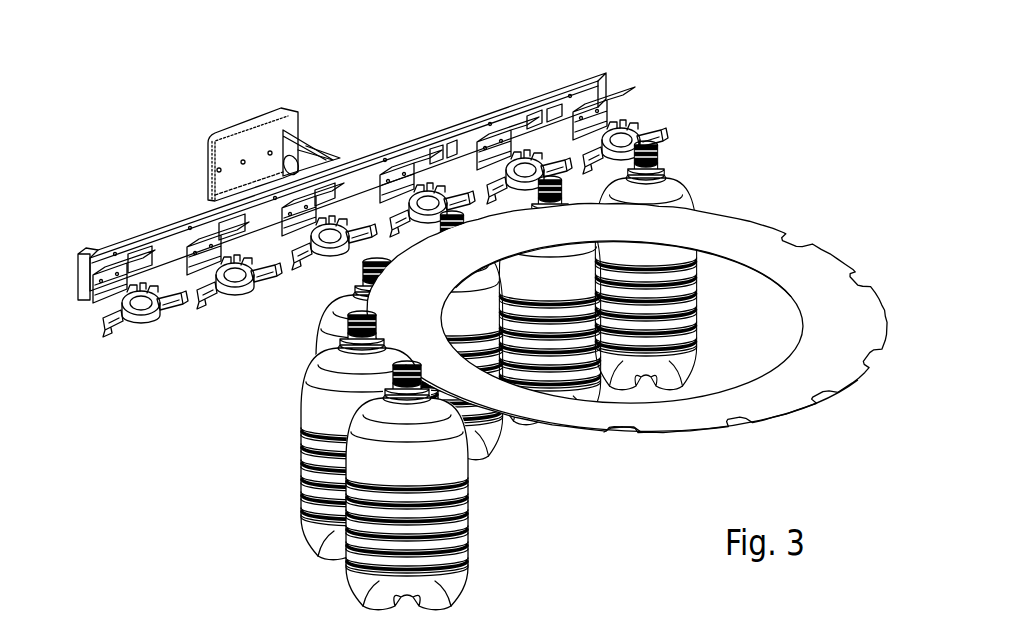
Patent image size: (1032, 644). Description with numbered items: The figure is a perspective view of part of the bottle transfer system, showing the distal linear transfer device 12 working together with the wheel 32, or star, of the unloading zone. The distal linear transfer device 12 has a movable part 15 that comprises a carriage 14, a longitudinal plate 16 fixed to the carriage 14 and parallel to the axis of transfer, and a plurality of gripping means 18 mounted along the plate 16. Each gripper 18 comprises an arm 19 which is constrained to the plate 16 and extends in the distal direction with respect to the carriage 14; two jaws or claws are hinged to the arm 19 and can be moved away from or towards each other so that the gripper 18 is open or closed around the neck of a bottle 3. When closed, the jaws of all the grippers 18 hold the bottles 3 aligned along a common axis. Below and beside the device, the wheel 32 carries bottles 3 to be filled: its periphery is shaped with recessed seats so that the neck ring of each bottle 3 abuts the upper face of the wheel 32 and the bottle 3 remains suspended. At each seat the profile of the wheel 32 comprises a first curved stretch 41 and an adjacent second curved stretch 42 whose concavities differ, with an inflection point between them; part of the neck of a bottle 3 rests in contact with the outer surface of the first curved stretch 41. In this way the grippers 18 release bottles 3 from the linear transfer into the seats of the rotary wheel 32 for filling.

The bottle 3 is at (667, 193).
The distal linear transfer device 12 is at (130, 104).
The carriage 14 is at (233, 147).
The movable part 15 is at (293, 99).
The longitudinal plate 16 is at (435, 147).
The gripping means 18 is at (641, 102).
The arm 19 is at (503, 150).
The wheel 32 is at (743, 242).
The first curved stretch 41 is at (620, 428).
The second curved stretch 42 is at (643, 433).